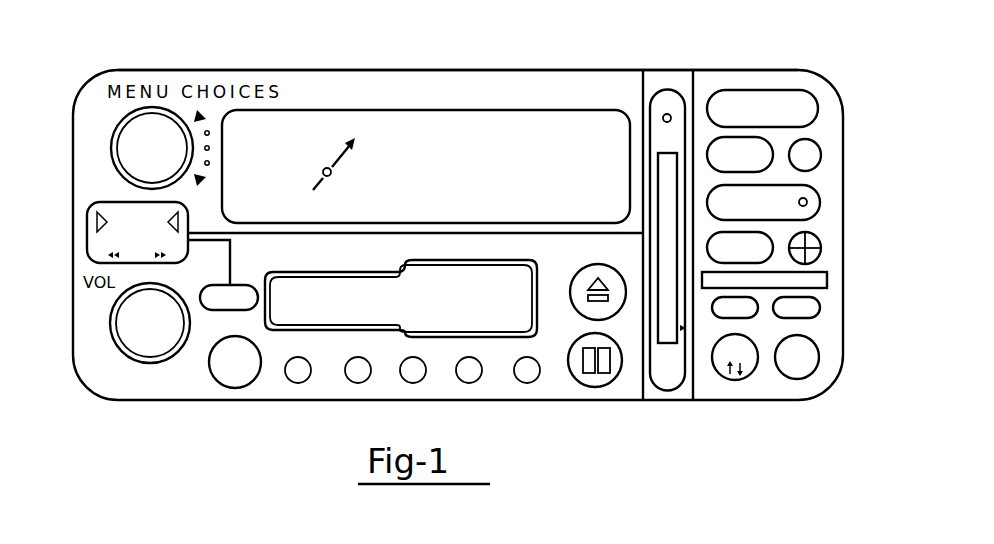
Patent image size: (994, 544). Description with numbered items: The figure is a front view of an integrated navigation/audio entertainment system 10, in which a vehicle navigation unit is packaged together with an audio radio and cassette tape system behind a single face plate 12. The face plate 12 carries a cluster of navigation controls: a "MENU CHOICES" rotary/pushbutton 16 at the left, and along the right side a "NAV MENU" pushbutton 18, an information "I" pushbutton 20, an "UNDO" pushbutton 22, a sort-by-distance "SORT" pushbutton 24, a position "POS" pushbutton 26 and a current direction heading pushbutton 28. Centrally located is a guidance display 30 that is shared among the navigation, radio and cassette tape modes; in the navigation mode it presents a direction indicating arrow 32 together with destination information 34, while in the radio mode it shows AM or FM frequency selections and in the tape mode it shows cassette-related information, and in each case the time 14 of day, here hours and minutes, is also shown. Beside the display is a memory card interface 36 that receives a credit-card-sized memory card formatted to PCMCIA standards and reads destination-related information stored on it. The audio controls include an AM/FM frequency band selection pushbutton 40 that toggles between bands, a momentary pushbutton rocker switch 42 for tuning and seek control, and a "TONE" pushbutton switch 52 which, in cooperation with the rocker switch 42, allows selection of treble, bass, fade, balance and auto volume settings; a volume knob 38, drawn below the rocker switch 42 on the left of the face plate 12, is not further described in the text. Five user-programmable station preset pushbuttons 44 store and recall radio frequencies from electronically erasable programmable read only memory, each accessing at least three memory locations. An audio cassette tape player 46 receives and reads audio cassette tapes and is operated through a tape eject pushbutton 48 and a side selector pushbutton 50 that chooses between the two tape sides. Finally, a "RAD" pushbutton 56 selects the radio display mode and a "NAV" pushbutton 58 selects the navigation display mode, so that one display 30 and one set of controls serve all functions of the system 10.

The navigation/audio entertainment system 10 is at (449, 51).
The face plate 12 is at (560, 70).
The time of day 14 is at (565, 203).
The MENU CHOICES rotary/pushbutton 16 is at (142, 138).
The NAV MENU pushbutton 18 is at (787, 92).
The information pushbutton 20 is at (812, 147).
The UNDO pushbutton 22 is at (770, 155).
The SORT pushbutton 24 is at (812, 187).
The POS pushbutton 26 is at (767, 233).
The current direction heading pushbutton 28 is at (817, 247).
The guidance display 30 is at (373, 110).
The direction indicating arrow 32 is at (320, 148).
The destination information 34 is at (565, 154).
The memory card interface 36 is at (668, 173).
The volume knob 38 is at (145, 333).
The AM/FM frequency band selection control pushbutton 40 is at (812, 353).
The momentary pushbutton rocker switch 42 is at (90, 212).
The station preset pushbuttons 44 is at (303, 383).
The audio cassette tape player 46 is at (487, 312).
The tape eject pushbutton 48 is at (616, 298).
The side selector pushbutton 50 is at (745, 372).
The TONE pushbutton switch 52 is at (230, 310).
The RAD pushbutton 56 is at (717, 315).
The NAV pushbutton 58 is at (813, 310).